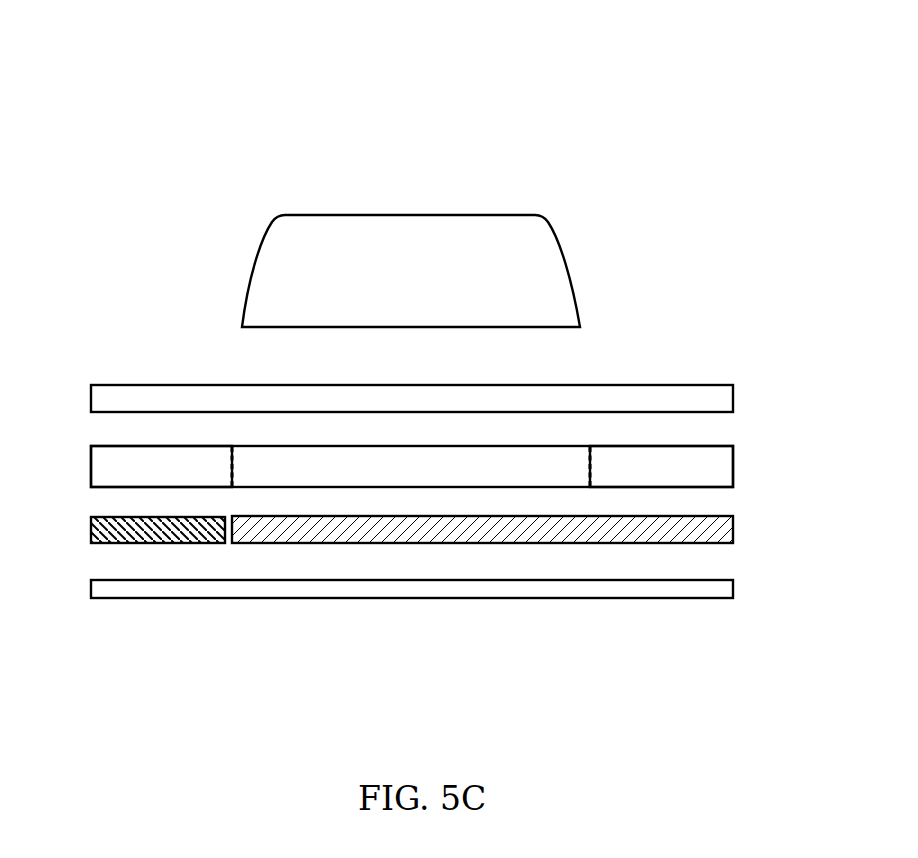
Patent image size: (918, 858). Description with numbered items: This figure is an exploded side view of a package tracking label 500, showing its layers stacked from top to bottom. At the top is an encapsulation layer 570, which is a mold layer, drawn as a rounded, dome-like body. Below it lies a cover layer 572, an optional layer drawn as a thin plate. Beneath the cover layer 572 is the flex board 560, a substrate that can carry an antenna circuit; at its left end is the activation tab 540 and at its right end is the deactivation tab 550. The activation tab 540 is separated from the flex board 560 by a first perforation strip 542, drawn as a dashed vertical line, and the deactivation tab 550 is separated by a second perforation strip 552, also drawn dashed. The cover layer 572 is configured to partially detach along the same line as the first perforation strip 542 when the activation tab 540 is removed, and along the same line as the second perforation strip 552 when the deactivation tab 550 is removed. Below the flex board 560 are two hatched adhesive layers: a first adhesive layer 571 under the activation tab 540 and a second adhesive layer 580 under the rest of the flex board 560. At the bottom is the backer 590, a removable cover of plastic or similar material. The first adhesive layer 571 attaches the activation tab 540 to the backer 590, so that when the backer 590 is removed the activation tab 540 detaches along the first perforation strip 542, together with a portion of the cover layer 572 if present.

The package tracking label 500 is at (553, 49).
The encapsulation layer 570 is at (418, 215).
The cover layer 572 is at (155, 385).
The flex board 560 is at (428, 475).
The activation tab 540 is at (97, 467).
The deactivation tab 550 is at (727, 466).
The first perforation strip 542 is at (232, 460).
The second perforation strip 552 is at (590, 458).
The first adhesive layer 571 is at (97, 534).
The second adhesive layer 580 is at (728, 533).
The backer 590 is at (158, 598).